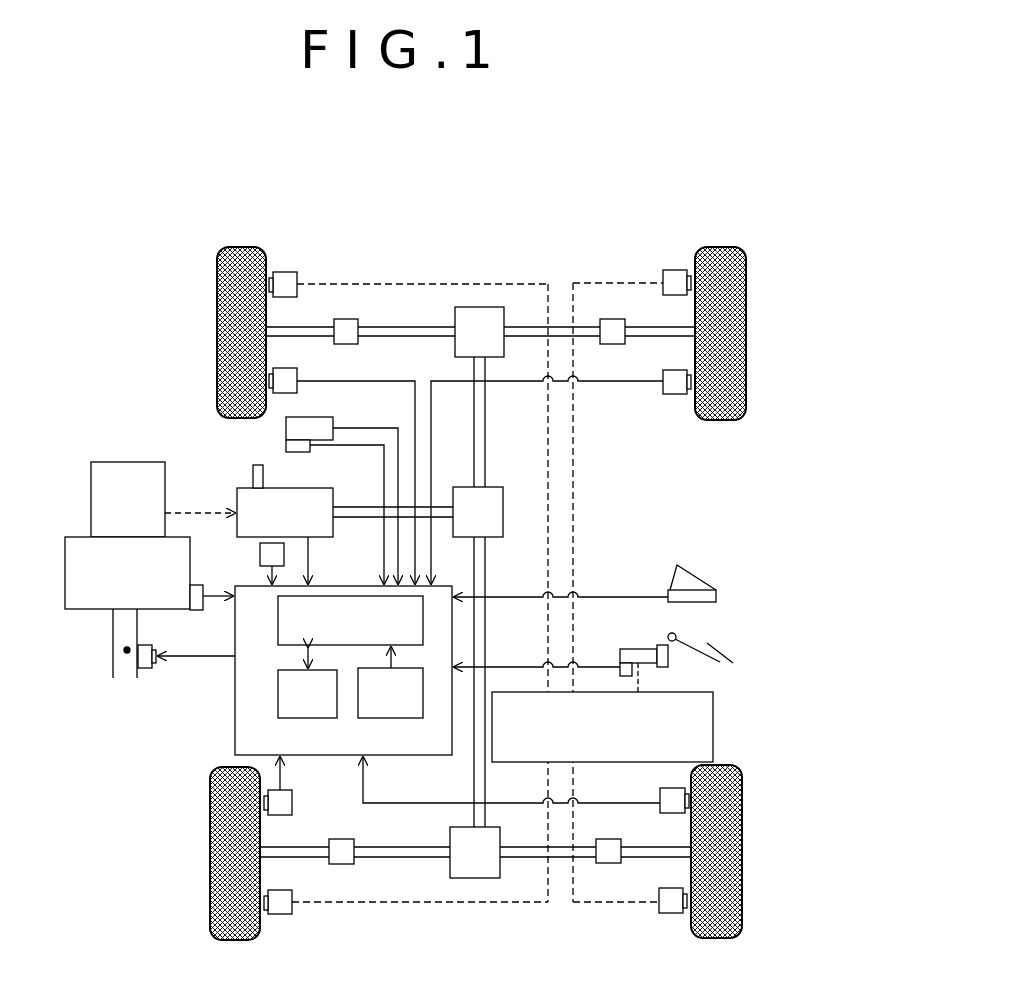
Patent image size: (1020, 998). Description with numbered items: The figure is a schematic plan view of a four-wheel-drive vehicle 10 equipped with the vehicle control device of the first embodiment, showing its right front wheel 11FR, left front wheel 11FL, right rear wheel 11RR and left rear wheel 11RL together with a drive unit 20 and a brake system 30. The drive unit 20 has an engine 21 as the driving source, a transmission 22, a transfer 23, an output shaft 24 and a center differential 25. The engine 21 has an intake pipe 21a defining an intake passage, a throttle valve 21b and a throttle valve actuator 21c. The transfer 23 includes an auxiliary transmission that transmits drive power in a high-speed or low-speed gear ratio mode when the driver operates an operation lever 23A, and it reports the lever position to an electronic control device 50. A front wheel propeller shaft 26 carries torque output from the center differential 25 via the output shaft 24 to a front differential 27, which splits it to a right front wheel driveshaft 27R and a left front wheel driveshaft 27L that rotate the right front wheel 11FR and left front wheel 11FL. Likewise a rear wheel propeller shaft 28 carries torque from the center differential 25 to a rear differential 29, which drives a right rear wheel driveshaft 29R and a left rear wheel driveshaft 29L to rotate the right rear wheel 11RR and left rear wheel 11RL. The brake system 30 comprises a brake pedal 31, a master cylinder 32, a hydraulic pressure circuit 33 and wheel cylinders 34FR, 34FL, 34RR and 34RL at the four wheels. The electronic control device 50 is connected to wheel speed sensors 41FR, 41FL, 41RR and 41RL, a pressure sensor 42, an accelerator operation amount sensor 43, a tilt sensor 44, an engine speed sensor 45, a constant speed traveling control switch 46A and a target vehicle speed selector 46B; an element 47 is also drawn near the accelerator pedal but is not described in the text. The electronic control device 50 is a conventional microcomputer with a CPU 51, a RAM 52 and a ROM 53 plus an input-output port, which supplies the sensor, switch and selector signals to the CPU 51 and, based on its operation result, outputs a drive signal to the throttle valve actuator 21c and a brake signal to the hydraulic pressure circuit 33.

The vehicle 10 is at (166, 257).
The left front wheel 11FL is at (217, 305).
The right front wheel 11FR is at (722, 247).
The left rear wheel 11RL is at (210, 830).
The right rear wheel 11RR is at (716, 938).
The drive unit 20 is at (118, 454).
The engine 21 is at (127, 573).
The intake pipe 21a is at (113, 655).
The throttle valve 21b is at (127, 653).
The throttle valve actuator 21c is at (146, 668).
The transmission 22 is at (128, 499).
The transfer 23 is at (237, 498).
The operation lever 23A is at (253, 476).
The output shaft 24 is at (442, 507).
The center differential 25 is at (503, 510).
The front wheel propeller shaft 26 is at (485, 428).
The front differential 27 is at (455, 348).
The left front wheel driveshaft 27L is at (360, 327).
The right front wheel driveshaft 27R is at (627, 327).
The rear wheel propeller shaft 28 is at (485, 568).
The rear differential 29 is at (450, 870).
The left rear wheel driveshaft 29L is at (356, 847).
The right rear wheel driveshaft 29R is at (636, 831).
The brake system 30 is at (682, 672).
The brake pedal 31 is at (716, 648).
The master cylinder 32 is at (638, 649).
The hydraulic pressure circuit 33 is at (602, 727).
The wheel cylinder 34FL is at (286, 272).
The wheel cylinder 34FR is at (668, 270).
The wheel cylinder 34RL is at (296, 896).
The wheel cylinder 34RR is at (664, 888).
The wheel speed sensor 41FL is at (300, 372).
The wheel speed sensor 41FR is at (660, 370).
The wheel speed sensor 41RL is at (316, 790).
The wheel speed sensor 41RR is at (662, 788).
The pressure sensor 42 is at (620, 660).
The accelerator operation amount sensor 43 is at (716, 597).
The tilt sensor 44 is at (262, 553).
The engine speed sensor 45 is at (198, 610).
The constant speed traveling control switch 46A is at (286, 428).
The target vehicle speed selector 46B is at (286, 446).
The accelerator position sensor 47 is at (696, 575).
The electronic control device 50 is at (235, 736).
The CPU 51 is at (278, 630).
The RAM 52 is at (310, 722).
The ROM 53 is at (384, 722).